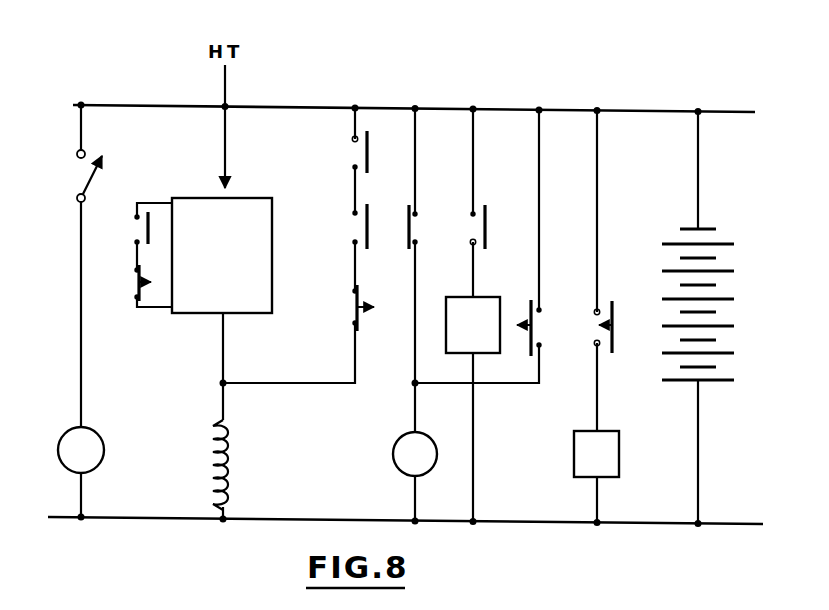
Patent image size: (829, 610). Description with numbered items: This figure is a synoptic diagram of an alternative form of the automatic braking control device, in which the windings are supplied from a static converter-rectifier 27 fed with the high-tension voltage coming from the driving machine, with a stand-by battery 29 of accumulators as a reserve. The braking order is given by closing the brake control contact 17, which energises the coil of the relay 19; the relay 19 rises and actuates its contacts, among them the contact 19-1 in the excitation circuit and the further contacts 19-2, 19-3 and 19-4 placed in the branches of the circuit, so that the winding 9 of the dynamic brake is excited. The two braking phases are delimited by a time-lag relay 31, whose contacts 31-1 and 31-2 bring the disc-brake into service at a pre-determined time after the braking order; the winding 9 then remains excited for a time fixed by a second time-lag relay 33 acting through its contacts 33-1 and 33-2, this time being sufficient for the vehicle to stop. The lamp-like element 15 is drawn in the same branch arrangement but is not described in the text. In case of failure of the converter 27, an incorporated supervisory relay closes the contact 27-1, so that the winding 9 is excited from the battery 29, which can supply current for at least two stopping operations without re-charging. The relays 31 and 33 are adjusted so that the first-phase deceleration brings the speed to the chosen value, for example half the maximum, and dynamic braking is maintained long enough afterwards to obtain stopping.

The winding 9 is at (228, 463).
The lamp 15 is at (397, 447).
The brake control contact 17 is at (97, 178).
The relay 19 is at (94, 449).
The contact 19-1 is at (137, 237).
The relay contact 19-2 is at (418, 226).
The relay contact 19-3 is at (473, 229).
The relay contact 19-4 is at (355, 228).
The static converter-rectifier 27 is at (234, 212).
The contact 27-1 is at (354, 151).
The stand-by battery 29 is at (746, 234).
The time-lag relay 31 is at (490, 310).
The relay contact 31-1 is at (530, 334).
The relay contact 31-2 is at (592, 323).
The second time-lag relay 33 is at (585, 440).
The relay contact 33-1 is at (133, 287).
The relay contact 33-2 is at (352, 310).